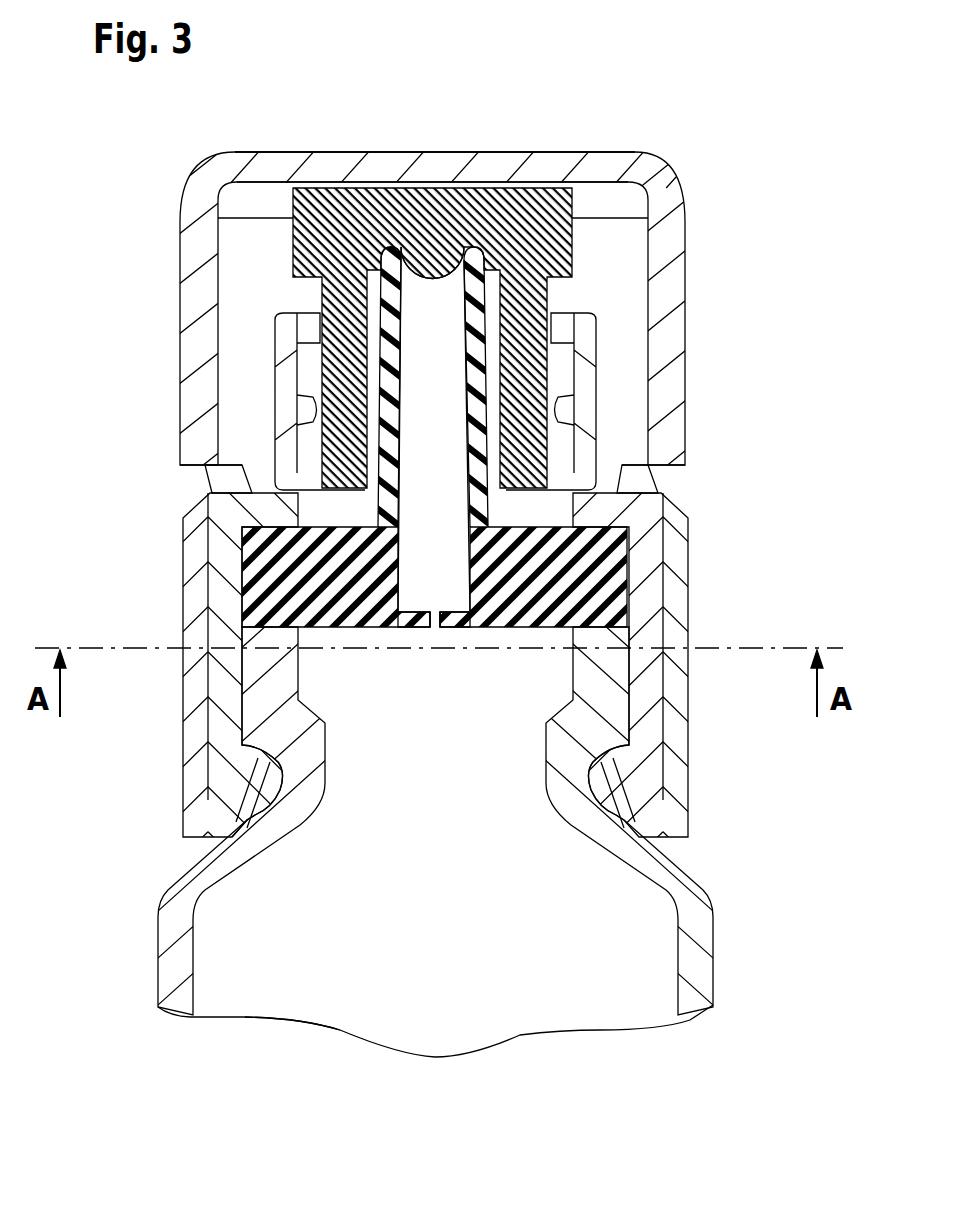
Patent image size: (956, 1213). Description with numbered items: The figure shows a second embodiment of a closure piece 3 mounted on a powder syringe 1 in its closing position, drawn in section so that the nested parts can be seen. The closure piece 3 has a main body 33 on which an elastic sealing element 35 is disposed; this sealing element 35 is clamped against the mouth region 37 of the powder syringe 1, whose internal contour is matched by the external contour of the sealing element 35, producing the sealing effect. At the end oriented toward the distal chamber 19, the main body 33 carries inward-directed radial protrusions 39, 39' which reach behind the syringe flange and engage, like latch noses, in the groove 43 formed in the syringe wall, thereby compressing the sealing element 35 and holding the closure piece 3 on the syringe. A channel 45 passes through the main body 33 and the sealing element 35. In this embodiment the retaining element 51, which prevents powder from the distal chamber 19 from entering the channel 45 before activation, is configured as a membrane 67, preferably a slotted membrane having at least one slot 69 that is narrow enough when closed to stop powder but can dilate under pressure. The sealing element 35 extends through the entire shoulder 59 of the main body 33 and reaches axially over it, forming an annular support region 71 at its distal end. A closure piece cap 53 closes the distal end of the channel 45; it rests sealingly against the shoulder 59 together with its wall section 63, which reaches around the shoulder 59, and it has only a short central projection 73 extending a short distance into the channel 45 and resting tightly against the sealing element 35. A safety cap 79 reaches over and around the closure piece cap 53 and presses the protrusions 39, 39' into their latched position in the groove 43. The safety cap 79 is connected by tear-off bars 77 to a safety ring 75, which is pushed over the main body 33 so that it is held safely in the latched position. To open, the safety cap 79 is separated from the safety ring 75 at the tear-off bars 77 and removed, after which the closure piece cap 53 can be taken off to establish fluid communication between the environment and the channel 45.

The powder syringe 1 is at (753, 961).
The closure piece 3 is at (717, 88).
The distal chamber 19 is at (218, 970).
The main body 33 is at (648, 553).
The sealing element 35 is at (247, 538).
The mouth region 37 is at (597, 668).
The radial protrusion 39 is at (683, 793).
The radial protrusion 39' is at (185, 784).
The groove 43 is at (235, 795).
The channel 45 is at (433, 477).
The retaining element 51 is at (625, 608).
The closure piece cap 53 is at (520, 195).
The shoulder 59 is at (592, 318).
The wall section 63 is at (545, 388).
The membrane 67 is at (455, 615).
The slot 69 is at (430, 628).
The annular support region 71 is at (572, 245).
The central projection 73 is at (414, 264).
The safety ring 75 is at (190, 605).
The tear-off bars 77 is at (660, 492).
The safety cap 79 is at (635, 166).